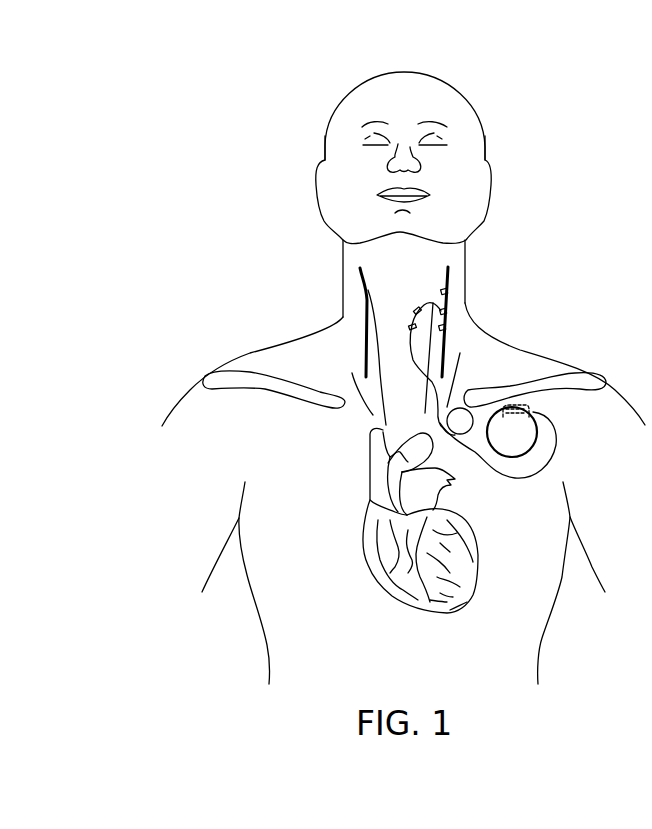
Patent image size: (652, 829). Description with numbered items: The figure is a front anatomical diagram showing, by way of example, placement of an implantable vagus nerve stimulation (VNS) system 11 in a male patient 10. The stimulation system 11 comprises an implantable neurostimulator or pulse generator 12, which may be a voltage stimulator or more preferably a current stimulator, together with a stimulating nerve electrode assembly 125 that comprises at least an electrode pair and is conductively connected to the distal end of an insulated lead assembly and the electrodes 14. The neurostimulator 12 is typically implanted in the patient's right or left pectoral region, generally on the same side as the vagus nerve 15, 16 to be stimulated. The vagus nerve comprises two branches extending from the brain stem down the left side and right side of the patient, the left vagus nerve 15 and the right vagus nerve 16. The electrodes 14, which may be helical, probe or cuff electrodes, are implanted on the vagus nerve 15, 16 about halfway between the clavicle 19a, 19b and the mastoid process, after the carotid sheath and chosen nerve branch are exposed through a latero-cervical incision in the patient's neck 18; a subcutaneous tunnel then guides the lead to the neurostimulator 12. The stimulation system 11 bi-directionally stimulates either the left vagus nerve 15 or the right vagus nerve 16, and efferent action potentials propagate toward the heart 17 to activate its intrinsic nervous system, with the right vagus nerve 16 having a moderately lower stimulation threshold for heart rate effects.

The patient 10 is at (325, 137).
The vagus nerve stimulation system 11 is at (505, 489).
The neurostimulator 12 is at (538, 432).
The stimulating nerve electrode assembly 125 is at (502, 301).
The electrodes 14 is at (446, 312).
The left vagus nerve 15 is at (448, 272).
The right vagus nerve 16 is at (362, 345).
The heart 17 is at (408, 595).
The neck 18 is at (337, 267).
The clavicle 19a is at (489, 387).
The clavicle 19b is at (314, 401).